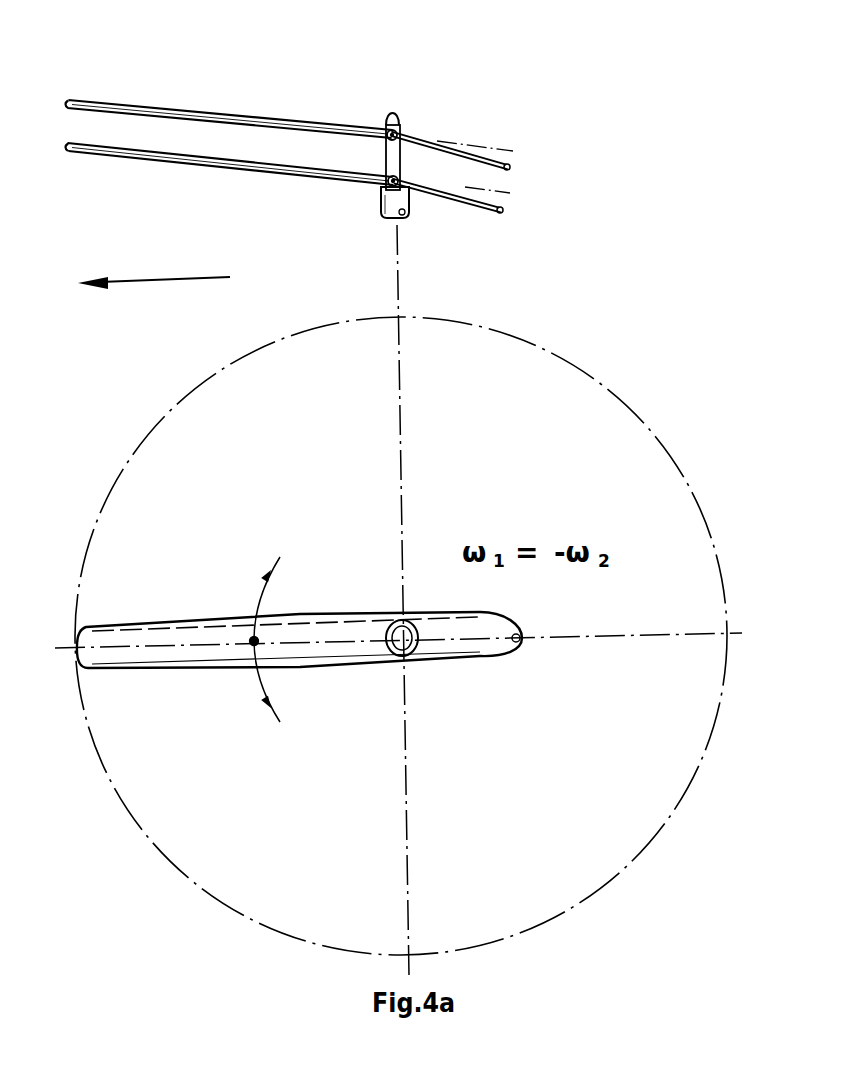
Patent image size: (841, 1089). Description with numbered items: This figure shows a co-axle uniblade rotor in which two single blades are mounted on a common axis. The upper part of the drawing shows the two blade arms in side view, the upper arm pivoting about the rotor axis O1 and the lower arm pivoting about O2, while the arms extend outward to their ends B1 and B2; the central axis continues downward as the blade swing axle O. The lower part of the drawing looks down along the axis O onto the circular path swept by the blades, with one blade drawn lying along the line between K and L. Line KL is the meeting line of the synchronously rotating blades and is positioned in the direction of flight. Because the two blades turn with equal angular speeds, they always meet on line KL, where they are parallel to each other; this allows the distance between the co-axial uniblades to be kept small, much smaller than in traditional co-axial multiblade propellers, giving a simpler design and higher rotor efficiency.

The rotor axis O1 is at (404, 131).
The second pivot axis of lower rotor arm O2 is at (405, 177).
The blade swing axle O is at (398, 266).
The end point of upper arm B1 is at (310, 144).
The end point of lower arm B2 is at (303, 191).
The meeting line end point K is at (27, 643).
The meeting line end point L is at (764, 631).